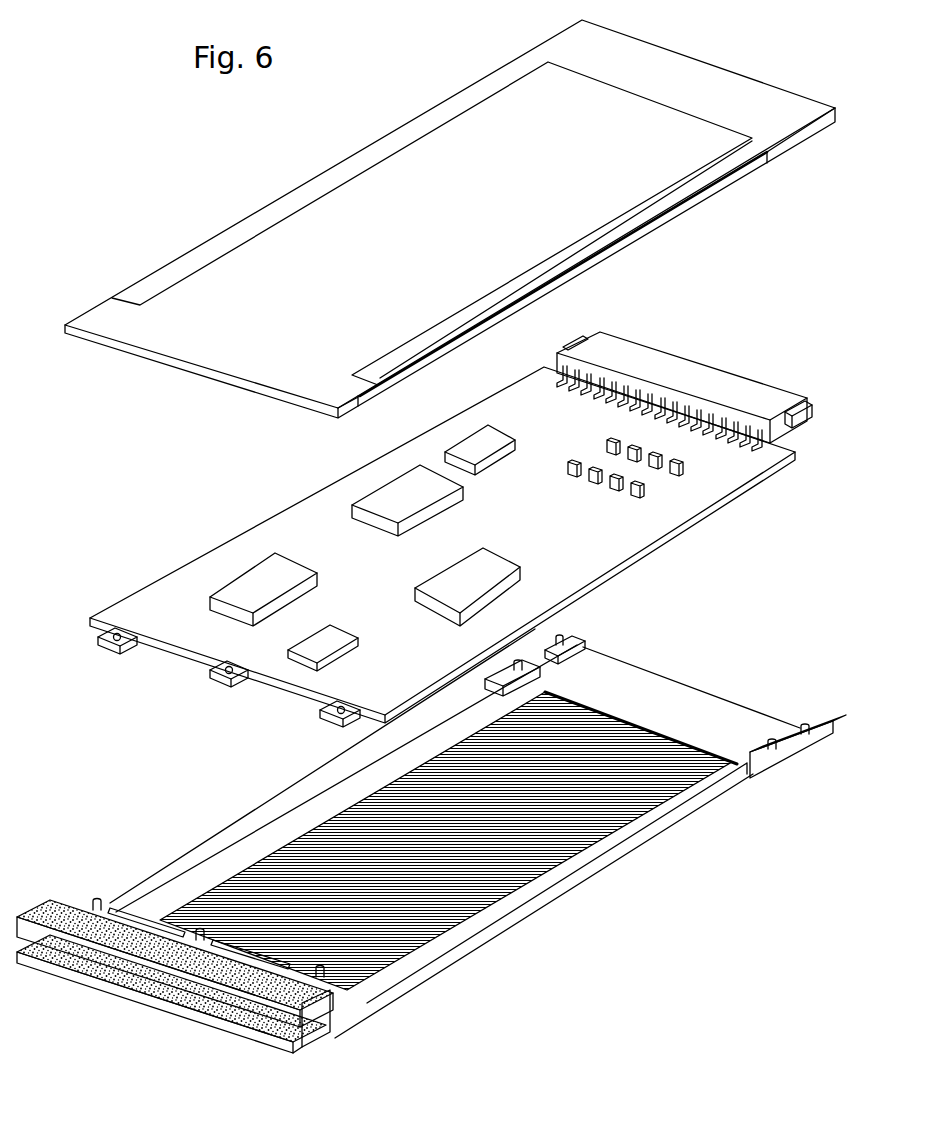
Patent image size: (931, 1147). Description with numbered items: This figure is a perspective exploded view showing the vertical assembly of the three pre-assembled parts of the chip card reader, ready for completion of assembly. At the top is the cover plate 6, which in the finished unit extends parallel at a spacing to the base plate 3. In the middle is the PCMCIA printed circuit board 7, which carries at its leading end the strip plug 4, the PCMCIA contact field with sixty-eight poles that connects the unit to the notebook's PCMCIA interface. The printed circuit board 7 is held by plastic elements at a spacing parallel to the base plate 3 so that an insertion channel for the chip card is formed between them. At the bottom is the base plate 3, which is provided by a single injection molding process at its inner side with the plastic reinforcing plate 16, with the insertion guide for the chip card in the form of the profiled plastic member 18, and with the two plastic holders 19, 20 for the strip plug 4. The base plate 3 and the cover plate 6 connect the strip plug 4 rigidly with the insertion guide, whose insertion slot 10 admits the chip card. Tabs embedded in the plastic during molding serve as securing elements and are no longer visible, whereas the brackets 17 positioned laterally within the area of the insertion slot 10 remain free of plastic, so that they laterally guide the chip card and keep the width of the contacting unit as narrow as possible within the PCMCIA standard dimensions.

The base plate 3 is at (650, 702).
The strip plug 4 is at (682, 366).
The cover plate 6 is at (710, 92).
The PCMCIA printed circuit board 7 is at (272, 648).
The insertion slot 10 is at (113, 963).
The plastic reinforcing plate 16 is at (495, 848).
The bracket 17 is at (313, 1023).
The profiled plastic member 18 is at (187, 953).
The plastic holder 19 is at (558, 633).
The plastic holder 20 is at (810, 747).